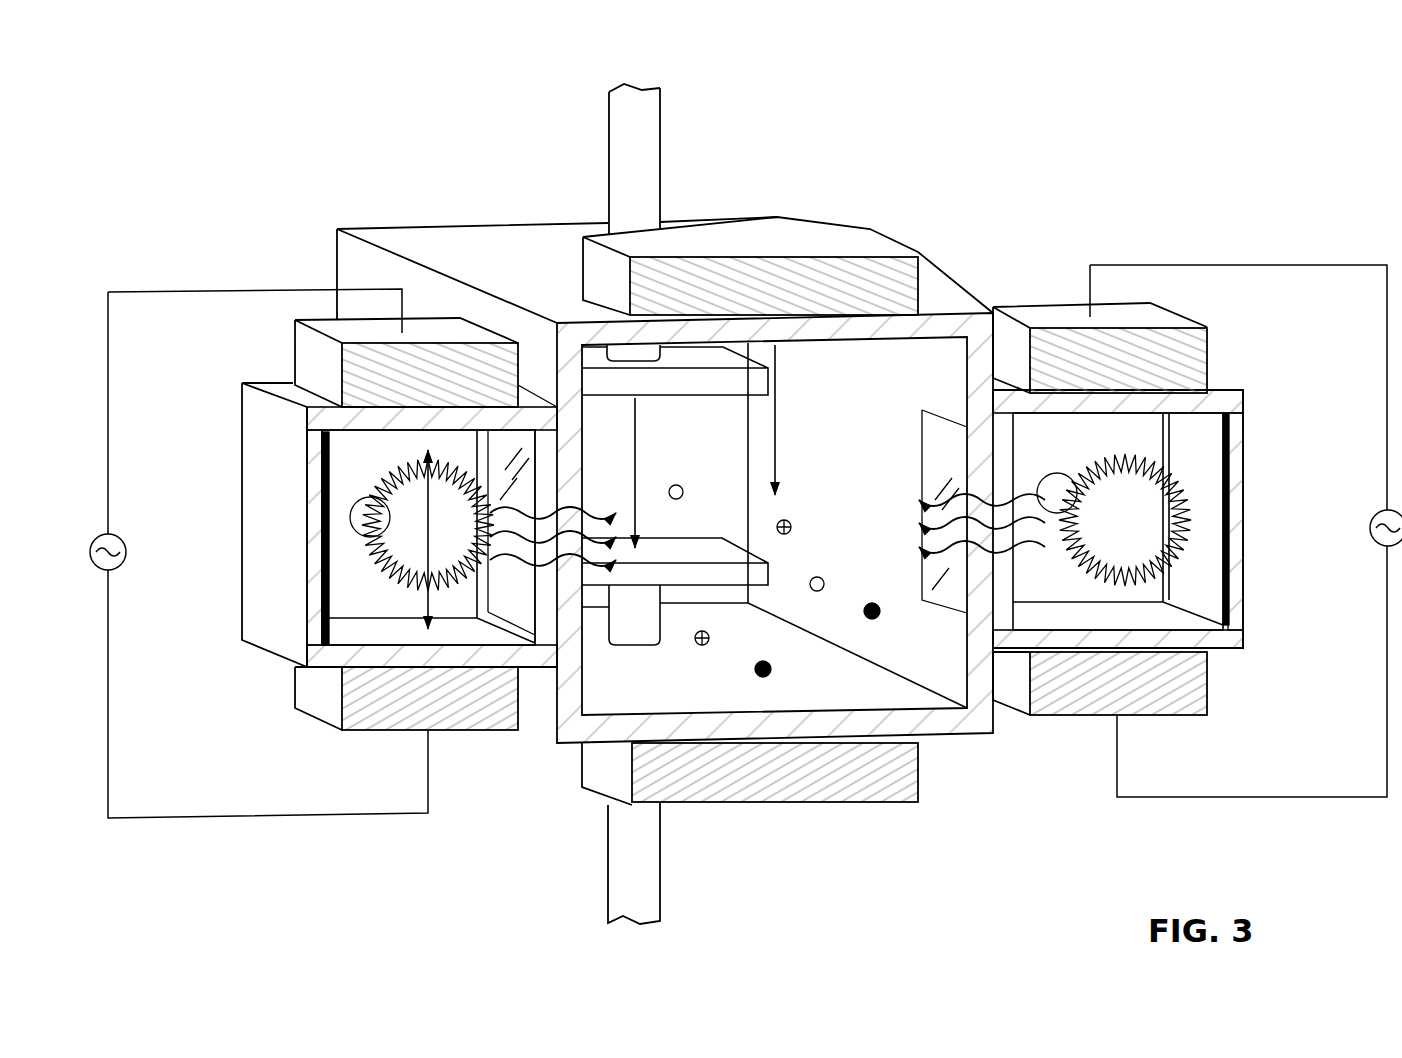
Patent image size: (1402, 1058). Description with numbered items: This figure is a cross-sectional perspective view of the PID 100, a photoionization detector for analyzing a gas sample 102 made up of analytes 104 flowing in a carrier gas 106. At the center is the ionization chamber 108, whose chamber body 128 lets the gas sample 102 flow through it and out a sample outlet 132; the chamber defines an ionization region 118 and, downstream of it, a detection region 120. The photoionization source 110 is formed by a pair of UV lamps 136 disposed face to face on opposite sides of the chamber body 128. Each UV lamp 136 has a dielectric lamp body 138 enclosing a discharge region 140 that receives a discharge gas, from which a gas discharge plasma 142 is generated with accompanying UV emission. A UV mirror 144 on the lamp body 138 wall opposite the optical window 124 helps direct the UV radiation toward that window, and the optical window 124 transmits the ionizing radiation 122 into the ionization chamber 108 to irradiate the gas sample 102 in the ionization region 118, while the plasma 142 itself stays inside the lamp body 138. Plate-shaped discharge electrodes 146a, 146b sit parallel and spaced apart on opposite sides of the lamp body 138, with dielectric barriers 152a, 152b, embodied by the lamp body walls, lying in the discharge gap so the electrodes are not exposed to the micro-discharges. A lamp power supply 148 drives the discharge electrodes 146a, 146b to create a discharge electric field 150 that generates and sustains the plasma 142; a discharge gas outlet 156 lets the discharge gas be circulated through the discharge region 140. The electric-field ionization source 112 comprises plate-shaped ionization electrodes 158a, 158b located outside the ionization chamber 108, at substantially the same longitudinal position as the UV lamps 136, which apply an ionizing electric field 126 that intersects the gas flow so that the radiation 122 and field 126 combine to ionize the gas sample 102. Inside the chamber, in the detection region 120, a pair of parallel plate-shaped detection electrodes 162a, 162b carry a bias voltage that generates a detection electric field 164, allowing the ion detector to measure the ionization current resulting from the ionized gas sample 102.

The PID 100 is at (1108, 100).
The gas sample 102 is at (855, 686).
The analytes 104 is at (700, 645).
The carrier gas 106 is at (763, 672).
The ionization chamber 108 is at (942, 300).
The photoionization source 110 is at (1182, 730).
The electric-field ionization source 112 is at (832, 200).
The ionization region 118 is at (897, 410).
The detection region 120 is at (606, 424).
The ionizing radiation 122 is at (517, 557).
The optical window 124 is at (1002, 588).
The ionizing electric field 126 is at (780, 456).
The chamber body 128 is at (872, 722).
The sample outlet 132 is at (465, 237).
The UV lamp 136 is at (216, 607).
The lamp body 138 is at (258, 433).
The discharge region 140 is at (350, 588).
The gas discharge plasma 142 is at (367, 562).
The UV mirror 144 is at (320, 607).
The discharge electrode 146a is at (432, 360).
The discharge electrode 146b is at (360, 707).
The lamp power supply 148 is at (105, 533).
The discharge electric field 150 is at (423, 508).
The dielectric barrier 152a is at (372, 417).
The dielectric barrier 152b is at (428, 655).
The discharge gas outlet 156 is at (1065, 473).
The ionization electrode 158a is at (880, 277).
The ionization electrode 158b is at (712, 777).
The detection electrode 162a is at (700, 382).
The detection electrode 162b is at (726, 572).
The detection electric field 164 is at (640, 447).